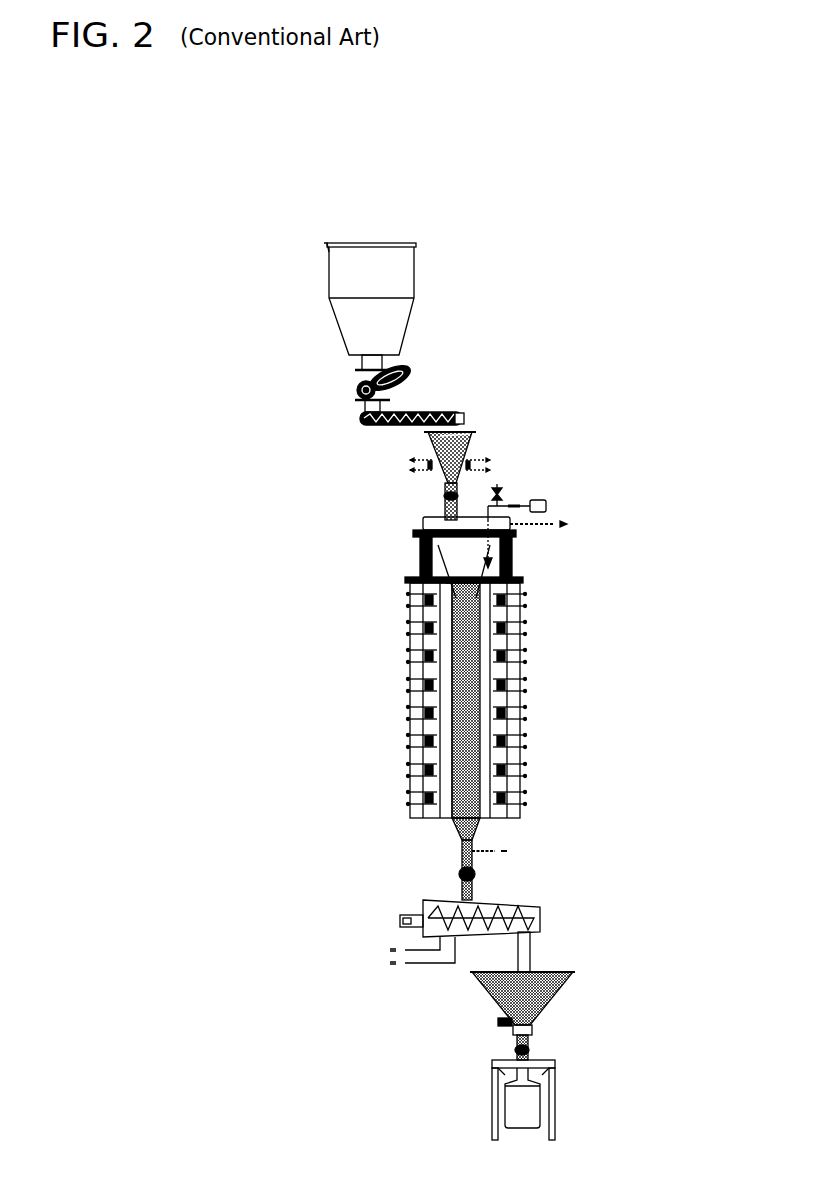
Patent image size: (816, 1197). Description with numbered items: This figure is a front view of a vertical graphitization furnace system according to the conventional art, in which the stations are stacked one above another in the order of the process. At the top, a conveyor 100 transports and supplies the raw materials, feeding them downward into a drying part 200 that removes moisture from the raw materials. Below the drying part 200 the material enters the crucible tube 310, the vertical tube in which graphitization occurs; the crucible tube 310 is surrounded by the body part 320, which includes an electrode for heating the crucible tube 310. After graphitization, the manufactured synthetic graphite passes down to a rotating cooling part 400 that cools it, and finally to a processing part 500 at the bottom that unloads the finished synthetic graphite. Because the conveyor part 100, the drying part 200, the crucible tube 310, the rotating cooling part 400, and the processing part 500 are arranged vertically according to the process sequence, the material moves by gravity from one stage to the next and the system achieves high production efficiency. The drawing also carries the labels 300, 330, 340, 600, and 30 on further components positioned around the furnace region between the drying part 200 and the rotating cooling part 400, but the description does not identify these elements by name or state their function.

The conveyor 100 is at (300, 365).
The drying part 200 is at (378, 468).
The gas supply valve 600 is at (528, 490).
The upper plate 340 is at (425, 519).
The upper housing with inlet cone 330 is at (512, 555).
The reactor (heating furnace) 300 is at (423, 711).
The crucible tube 310 is at (480, 700).
The body part 320 is at (408, 785).
The discharge pipe 30 is at (495, 851).
The rotating cooling part 400 is at (568, 890).
The processing part 500 is at (445, 1035).